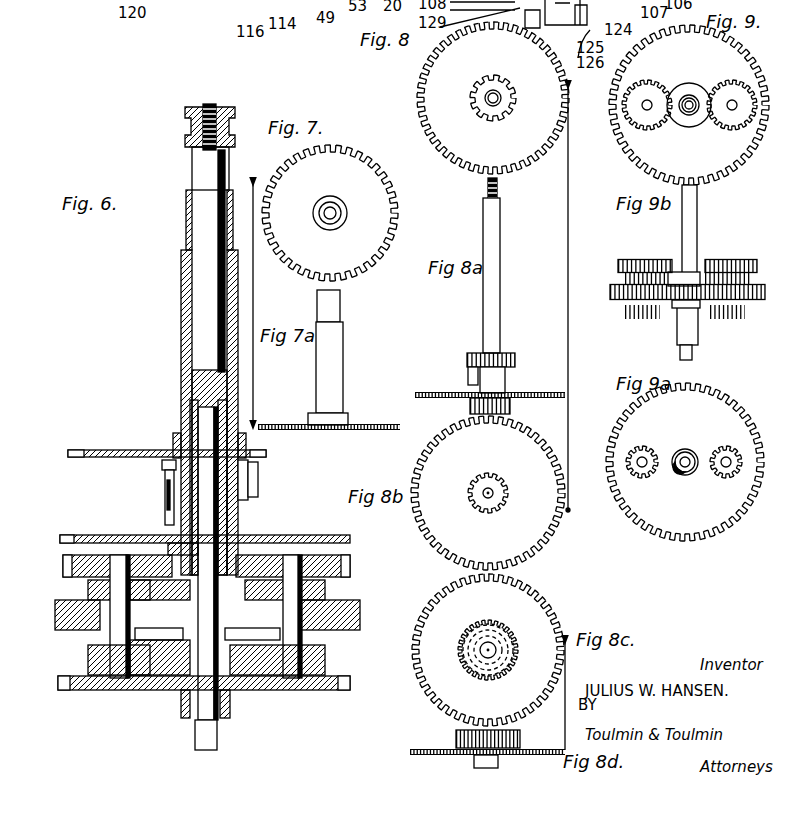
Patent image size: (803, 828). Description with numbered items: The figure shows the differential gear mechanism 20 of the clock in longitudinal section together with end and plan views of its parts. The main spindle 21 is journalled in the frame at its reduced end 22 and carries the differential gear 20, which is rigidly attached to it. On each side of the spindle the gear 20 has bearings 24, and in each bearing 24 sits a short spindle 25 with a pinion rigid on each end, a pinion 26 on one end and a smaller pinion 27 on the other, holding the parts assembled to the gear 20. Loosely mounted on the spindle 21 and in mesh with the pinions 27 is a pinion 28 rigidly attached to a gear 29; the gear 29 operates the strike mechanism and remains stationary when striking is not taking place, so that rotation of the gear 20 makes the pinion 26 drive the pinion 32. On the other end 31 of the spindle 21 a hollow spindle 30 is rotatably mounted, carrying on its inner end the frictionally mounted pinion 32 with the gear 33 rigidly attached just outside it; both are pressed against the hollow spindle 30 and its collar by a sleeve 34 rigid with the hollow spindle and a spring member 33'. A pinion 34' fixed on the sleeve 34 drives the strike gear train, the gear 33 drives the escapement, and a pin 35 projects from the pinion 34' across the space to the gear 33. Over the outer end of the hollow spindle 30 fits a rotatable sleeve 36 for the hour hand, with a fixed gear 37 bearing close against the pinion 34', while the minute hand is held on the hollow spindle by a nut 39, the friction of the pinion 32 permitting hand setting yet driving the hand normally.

In FIG. 6, the differential gear 20 is at (55, 612).
In FIG. 9, the differential gear 20 is at (752, 62).
In FIG. 9B, the differential gear 20 is at (765, 290).
In FIG. 9A, the differential gear 20 is at (750, 415).
In FIG. 6, the main spindle 21 is at (200, 500).
In FIG. 9, the main spindle 21 is at (689, 100).
In FIG. 9B, the main spindle 21 is at (690, 224).
In FIG. 9A, the main spindle 21 is at (685, 452).
In FIG. 6, the reduced end 22 is at (195, 738).
In FIG. 9B, the reduced end 22 is at (680, 350).
In FIG. 9A, the reduced end 22 is at (682, 472).
In FIG. 6, the bearings 24 is at (88, 586).
In FIG. 9B, the bearings 24 is at (628, 278).
In FIG. 6, the short spindle 25 is at (112, 610).
In FIG. 9, the short spindle 25 is at (647, 105).
In FIG. 9A, the short spindle 25 is at (642, 462).
In FIG. 6, the pinion 26 is at (63, 570).
In FIG. 9, the pinion 26 is at (718, 128).
In FIG. 9B, the pinion 26 is at (660, 260).
In FIG. 6, the pinion 27 is at (88, 660).
In FIG. 9B, the pinion 27 is at (626, 318).
In FIG. 6, the pinion 28 is at (245, 662).
In FIG. 8C, the pinion 28 is at (460, 655).
In FIG. 8D, the pinion 28 is at (456, 735).
In FIG. 6, the gear 29 is at (98, 690).
In FIG. 8C, the gear 29 is at (418, 665).
In FIG. 8D, the gear 29 is at (410, 752).
In FIG. 6, the hollow spindle 30 is at (192, 392).
In FIG. 8, the hollow spindle 30 is at (485, 92).
In FIG. 8A, the hollow spindle 30 is at (497, 322).
In FIG. 6, the other end of the spindle 31 is at (198, 415).
In FIG. 6, the pinion 32 is at (168, 547).
In FIG. 8A, the pinion 32 is at (470, 410).
In FIG. 8B, the pinion 32 is at (498, 478).
In FIG. 6, the gear 33 is at (205, 527).
In FIG. 8, the gear 33 is at (493, 106).
In FIG. 8A, the gear 33 is at (484, 383).
In FIG. 6, the spring member 33' is at (265, 500).
In FIG. 8A, the spring member 33' is at (457, 378).
In FIG. 6, the sleeve 34 is at (144, 497).
In FIG. 8A, the sleeve 34 is at (512, 379).
In FIG. 6, the pinion 34' is at (258, 480).
In FIG. 8, the pinion 34' is at (508, 91).
In FIG. 8A, the pinion 34' is at (506, 347).
In FIG. 6, the pin 35 is at (165, 470).
In FIG. 6, the sleeve 36 is at (183, 365).
In FIG. 7, the sleeve 36 is at (342, 213).
In FIG. 7A, the sleeve 36 is at (340, 362).
In FIG. 6, the gear 37 is at (100, 451).
In FIG. 7, the gear 37 is at (385, 192).
In FIG. 7A, the gear 37 is at (365, 425).
In FIG. 6, the nut 39 is at (185, 117).